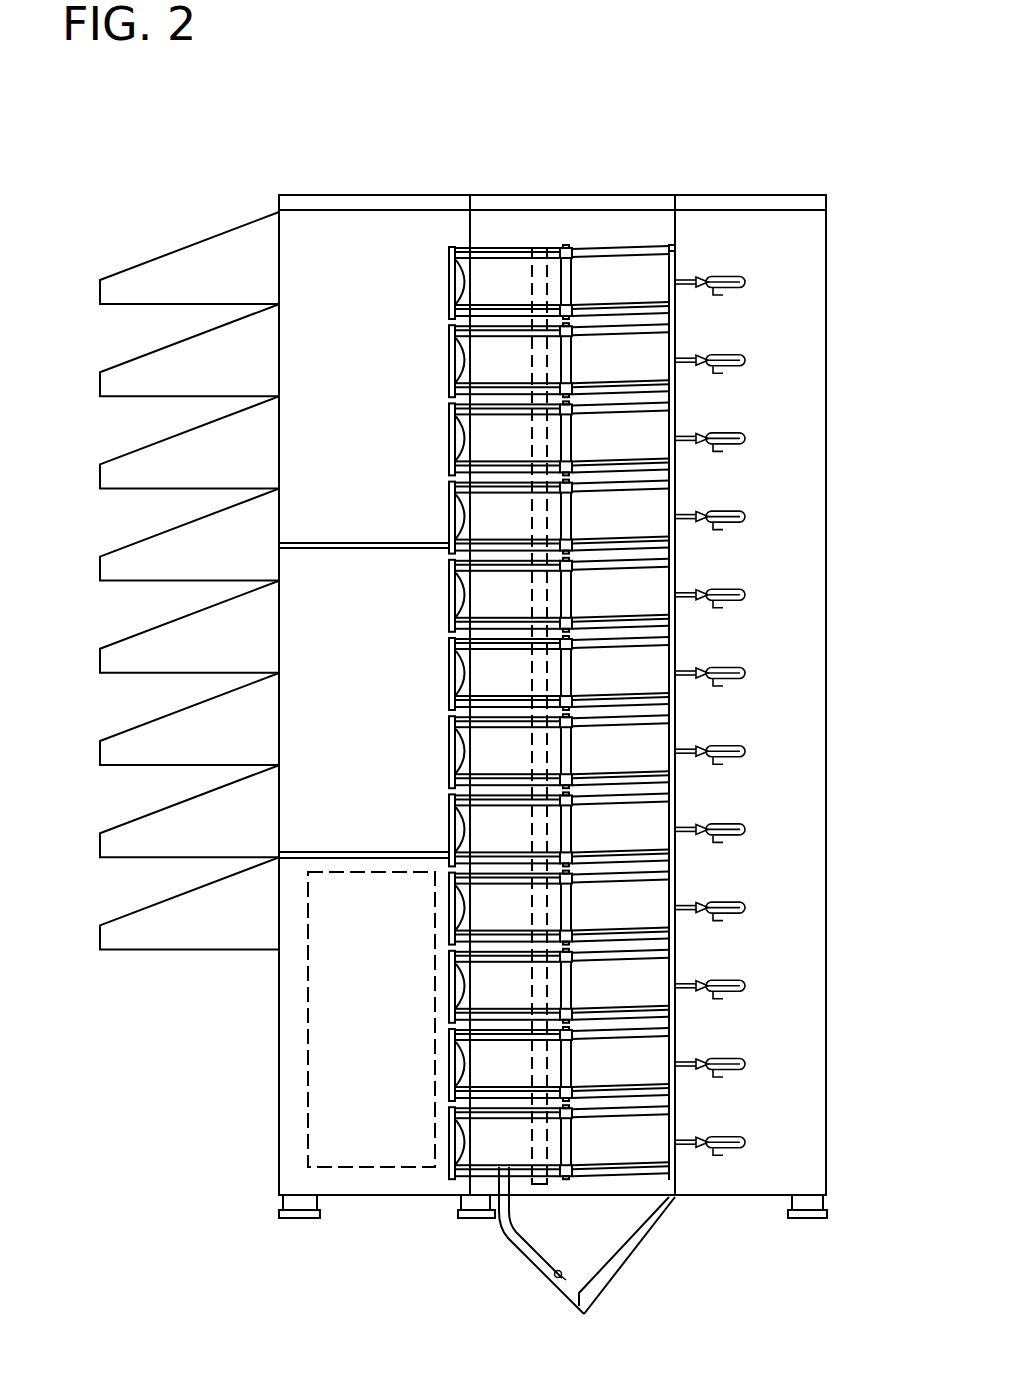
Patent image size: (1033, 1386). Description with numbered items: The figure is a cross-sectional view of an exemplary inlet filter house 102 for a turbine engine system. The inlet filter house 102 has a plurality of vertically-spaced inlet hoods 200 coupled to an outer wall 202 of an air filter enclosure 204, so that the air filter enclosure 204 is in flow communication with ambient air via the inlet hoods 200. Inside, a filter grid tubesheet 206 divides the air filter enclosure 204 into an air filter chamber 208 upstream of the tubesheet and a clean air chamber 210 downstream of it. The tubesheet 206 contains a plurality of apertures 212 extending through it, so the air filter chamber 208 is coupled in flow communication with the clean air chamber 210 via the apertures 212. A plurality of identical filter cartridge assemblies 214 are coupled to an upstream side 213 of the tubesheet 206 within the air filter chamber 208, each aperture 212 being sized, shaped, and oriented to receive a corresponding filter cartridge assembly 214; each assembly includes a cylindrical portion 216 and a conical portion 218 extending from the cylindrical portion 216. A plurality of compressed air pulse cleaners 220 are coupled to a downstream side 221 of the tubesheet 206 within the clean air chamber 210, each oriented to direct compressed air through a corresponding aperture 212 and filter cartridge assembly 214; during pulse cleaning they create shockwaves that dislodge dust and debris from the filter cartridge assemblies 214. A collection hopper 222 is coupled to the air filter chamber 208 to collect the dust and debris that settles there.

The inlet filter house 102 is at (312, 137).
The inlet hoods 200 is at (122, 255).
The outer wall 202 is at (279, 1093).
The air filter enclosure 204 is at (568, 182).
The filter grid tubesheet 206 is at (673, 1080).
The air filter chamber 208 is at (410, 786).
The clean air chamber 210 is at (805, 584).
The apertures 212 is at (690, 607).
The upstream side 213 is at (675, 220).
The filter cartridge assemblies 214 is at (572, 793).
The cylindrical portion 216 is at (527, 775).
The conical portion 218 is at (657, 935).
The compressed air pulse cleaners 220 is at (735, 357).
The downstream side 221 is at (675, 235).
The collection hopper 222 is at (630, 1262).